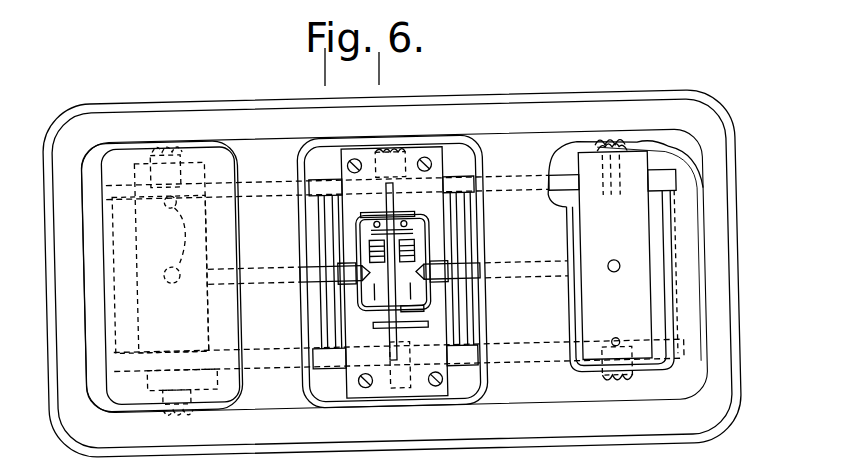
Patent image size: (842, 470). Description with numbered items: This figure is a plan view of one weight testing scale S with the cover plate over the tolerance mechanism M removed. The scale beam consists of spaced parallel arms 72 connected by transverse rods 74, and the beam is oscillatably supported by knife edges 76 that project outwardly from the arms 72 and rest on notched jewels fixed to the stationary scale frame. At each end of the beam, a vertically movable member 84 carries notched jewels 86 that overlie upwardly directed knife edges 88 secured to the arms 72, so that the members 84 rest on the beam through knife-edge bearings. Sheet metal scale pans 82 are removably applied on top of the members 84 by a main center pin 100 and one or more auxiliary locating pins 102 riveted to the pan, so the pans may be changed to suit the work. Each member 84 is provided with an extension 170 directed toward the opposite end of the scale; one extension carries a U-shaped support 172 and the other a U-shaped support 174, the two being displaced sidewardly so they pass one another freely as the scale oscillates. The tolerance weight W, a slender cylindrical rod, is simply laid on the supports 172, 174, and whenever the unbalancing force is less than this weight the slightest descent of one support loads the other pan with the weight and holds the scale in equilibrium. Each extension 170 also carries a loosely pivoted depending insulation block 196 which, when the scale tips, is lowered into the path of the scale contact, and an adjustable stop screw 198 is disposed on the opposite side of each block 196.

The weight testing scale S is at (519, 88).
The arms 72 is at (462, 182).
The transverse rods 74 is at (650, 195).
The knife edges 76 is at (368, 152).
The scale pans 82 is at (125, 405).
The vertically movable members 84 is at (633, 198).
The notched jewels 86 is at (193, 162).
The knife edges 88 is at (632, 315).
The main center pin 100 is at (171, 286).
The auxiliary locating pins 102 is at (185, 229).
The extensions 170 is at (267, 282).
The U-shaped support 172 is at (352, 222).
The U-shaped support 174 is at (425, 305).
The insulation block 196 is at (383, 285).
The stop screw 198 is at (413, 224).
The tolerance mechanism M is at (373, 296).
The tolerance weight W is at (395, 213).